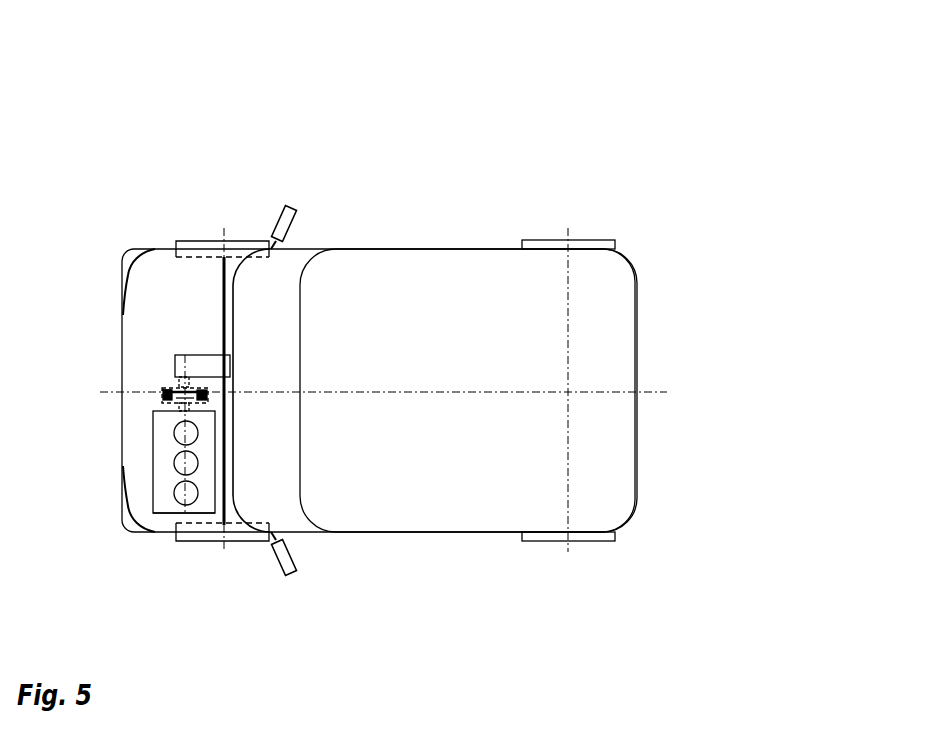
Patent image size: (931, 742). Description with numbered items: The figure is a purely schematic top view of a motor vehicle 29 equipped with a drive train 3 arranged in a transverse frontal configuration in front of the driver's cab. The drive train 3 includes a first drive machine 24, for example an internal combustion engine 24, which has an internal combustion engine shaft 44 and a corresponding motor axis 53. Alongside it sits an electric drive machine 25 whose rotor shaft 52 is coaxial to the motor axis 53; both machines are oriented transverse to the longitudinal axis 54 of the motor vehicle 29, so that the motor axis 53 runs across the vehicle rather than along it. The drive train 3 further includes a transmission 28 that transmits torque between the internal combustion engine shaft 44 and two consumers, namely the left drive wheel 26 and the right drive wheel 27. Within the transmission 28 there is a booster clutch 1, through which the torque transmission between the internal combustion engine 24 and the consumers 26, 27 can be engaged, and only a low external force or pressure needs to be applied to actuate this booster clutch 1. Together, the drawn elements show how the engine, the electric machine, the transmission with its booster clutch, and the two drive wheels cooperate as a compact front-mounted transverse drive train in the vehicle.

The booster clutch 1 is at (176, 423).
The drive train 3 is at (42, 253).
The first drive machine 24 is at (127, 468).
The electric drive machine 25 is at (178, 410).
The left drive wheel 26 is at (191, 541).
The right drive wheel 27 is at (202, 257).
The transmission 28 is at (175, 364).
The motor vehicle 29 is at (772, 72).
The internal combustion engine shaft 44 is at (163, 391).
The rotor shaft 52 is at (168, 387).
The motor axis 53 is at (163, 506).
The longitudinal axis 54 is at (657, 392).